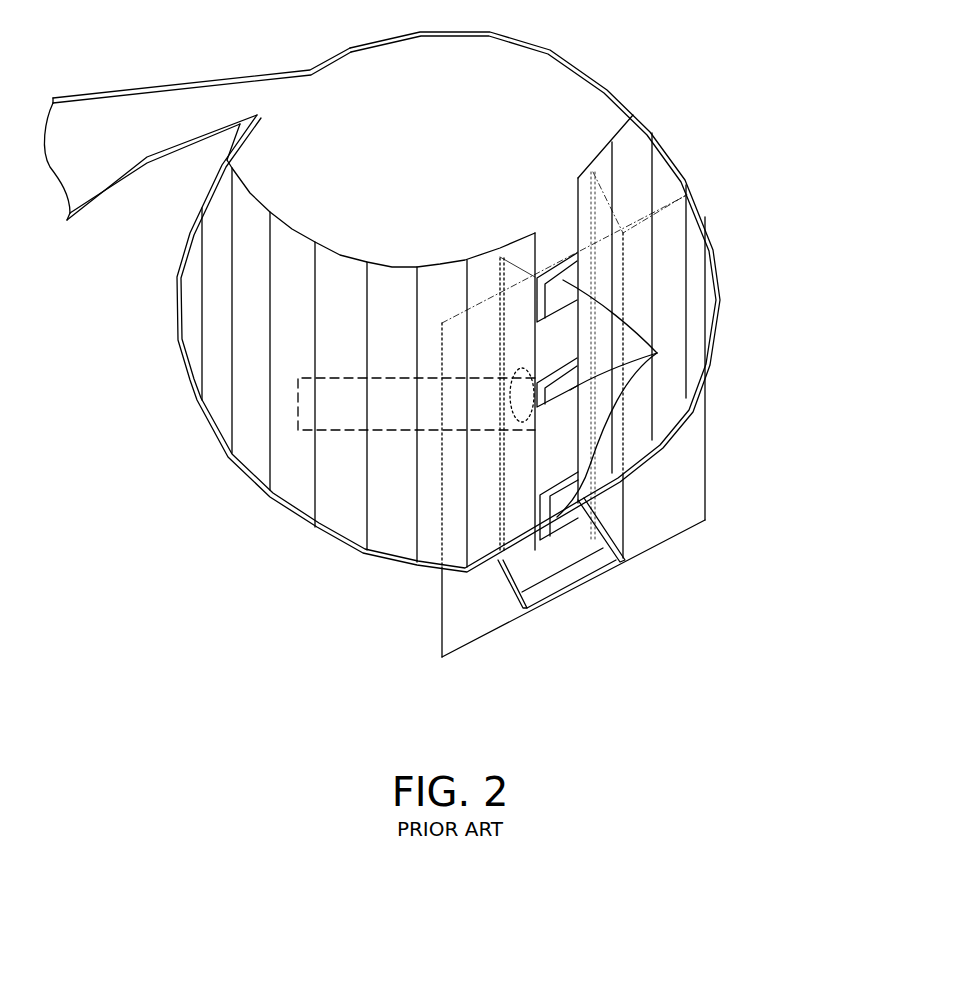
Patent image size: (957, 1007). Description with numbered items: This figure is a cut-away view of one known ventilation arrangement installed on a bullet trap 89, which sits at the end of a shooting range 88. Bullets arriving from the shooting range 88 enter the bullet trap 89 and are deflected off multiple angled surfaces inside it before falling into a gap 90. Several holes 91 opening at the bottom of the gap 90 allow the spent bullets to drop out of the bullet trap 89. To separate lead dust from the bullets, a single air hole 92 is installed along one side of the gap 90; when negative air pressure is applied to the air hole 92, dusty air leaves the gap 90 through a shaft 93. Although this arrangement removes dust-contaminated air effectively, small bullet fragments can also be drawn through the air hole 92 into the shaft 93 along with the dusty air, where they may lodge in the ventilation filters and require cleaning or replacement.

The shooting range 88 is at (105, 130).
The bullet trap 89 is at (713, 82).
The gap 90 is at (552, 230).
The holes 91 is at (612, 396).
The air hole 92 is at (540, 398).
The shaft 93 is at (350, 408).